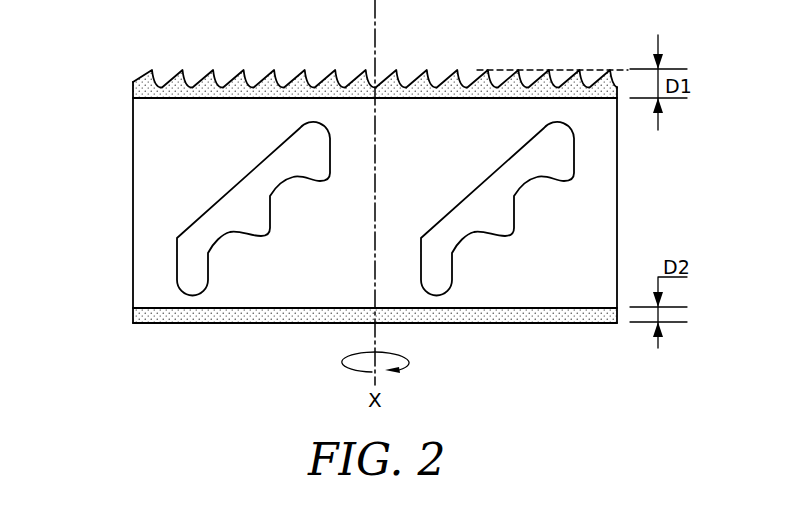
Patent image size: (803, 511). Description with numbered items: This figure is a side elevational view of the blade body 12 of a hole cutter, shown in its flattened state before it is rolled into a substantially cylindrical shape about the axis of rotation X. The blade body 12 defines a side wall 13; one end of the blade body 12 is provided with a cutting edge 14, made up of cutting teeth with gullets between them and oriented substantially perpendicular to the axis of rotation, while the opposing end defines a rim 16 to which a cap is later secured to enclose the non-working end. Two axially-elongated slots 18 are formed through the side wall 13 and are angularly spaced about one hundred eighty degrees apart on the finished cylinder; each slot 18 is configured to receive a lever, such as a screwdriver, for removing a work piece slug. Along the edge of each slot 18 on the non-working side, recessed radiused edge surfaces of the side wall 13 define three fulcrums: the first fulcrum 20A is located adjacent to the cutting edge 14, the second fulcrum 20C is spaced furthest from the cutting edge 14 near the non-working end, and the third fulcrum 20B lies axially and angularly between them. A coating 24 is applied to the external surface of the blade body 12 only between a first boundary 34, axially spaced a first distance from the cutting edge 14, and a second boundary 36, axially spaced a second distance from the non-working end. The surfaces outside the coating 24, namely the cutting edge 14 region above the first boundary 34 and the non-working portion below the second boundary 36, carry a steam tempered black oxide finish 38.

The blade body 12 is at (122, 170).
The side wall 13 is at (233, 290).
The cutting edge 14 is at (478, 84).
The rim 16 is at (496, 324).
The slot 18 is at (234, 192).
The first fulcrum 20A is at (561, 182).
The third fulcrum 20B is at (500, 238).
The second fulcrum 20C is at (437, 296).
The coating 24 is at (325, 236).
The first boundary 34 is at (437, 102).
The second boundary 36 is at (287, 308).
The black oxide finish 38 is at (553, 86).